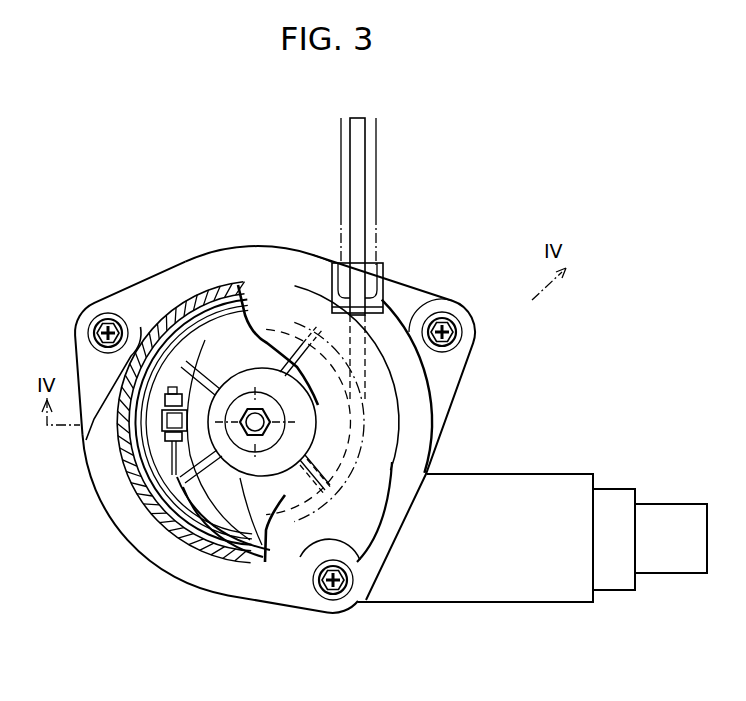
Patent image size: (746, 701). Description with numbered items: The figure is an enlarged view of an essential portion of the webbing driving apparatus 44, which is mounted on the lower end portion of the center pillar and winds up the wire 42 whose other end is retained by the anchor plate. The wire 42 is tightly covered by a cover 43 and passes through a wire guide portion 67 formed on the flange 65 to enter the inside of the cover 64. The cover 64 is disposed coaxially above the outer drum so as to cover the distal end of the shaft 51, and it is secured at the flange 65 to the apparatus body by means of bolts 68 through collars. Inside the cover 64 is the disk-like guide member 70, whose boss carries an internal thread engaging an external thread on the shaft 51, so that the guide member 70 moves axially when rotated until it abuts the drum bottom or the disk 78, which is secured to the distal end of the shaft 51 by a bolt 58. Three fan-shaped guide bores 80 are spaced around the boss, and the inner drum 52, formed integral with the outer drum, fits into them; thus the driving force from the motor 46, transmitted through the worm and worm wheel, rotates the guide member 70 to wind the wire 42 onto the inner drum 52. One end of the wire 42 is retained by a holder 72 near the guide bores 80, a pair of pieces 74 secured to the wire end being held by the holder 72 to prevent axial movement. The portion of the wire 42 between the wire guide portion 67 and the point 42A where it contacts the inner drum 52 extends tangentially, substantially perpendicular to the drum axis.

The webbing driving apparatus 44 is at (515, 143).
The wire 42 is at (358, 181).
The cover 43 is at (382, 148).
The point 42A is at (370, 398).
The motor 46 is at (520, 480).
The shaft 51 is at (225, 525).
The inner drum 52 is at (202, 522).
The bolt 58 is at (275, 422).
The cover 64 is at (272, 292).
The flange 65 is at (413, 292).
The wire guide portion 67 is at (338, 278).
The bolts 68 is at (108, 316).
The guide member 70 is at (213, 322).
The holder 72 is at (162, 421).
The pieces 74 is at (165, 401).
The disk 78 is at (268, 520).
The guide bores 80 is at (188, 305).